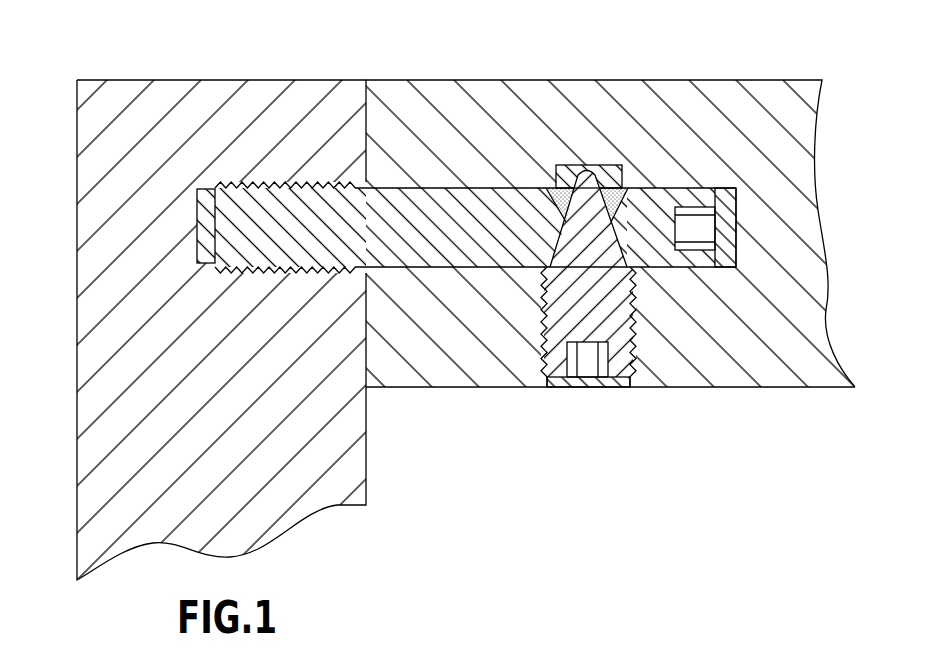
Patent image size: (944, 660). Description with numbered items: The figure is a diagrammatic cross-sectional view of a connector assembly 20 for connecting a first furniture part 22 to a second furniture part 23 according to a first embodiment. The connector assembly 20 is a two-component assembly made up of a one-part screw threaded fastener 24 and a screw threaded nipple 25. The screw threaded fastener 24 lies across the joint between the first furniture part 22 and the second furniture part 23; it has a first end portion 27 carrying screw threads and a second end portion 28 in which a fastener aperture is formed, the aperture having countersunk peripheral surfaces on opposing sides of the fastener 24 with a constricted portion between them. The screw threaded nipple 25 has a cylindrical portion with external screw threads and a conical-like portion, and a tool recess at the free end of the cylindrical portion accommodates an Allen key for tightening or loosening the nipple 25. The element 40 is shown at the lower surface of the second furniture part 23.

The connector assembly 20 is at (622, 155).
The first furniture part 22 is at (92, 203).
The second furniture part 23 is at (800, 132).
The screw threaded fastener 24 is at (417, 183).
The screw threaded nipple 25 is at (610, 293).
The first end portion 27 is at (240, 207).
The second end portion 28 is at (662, 196).
The surface of second component 40 is at (745, 388).